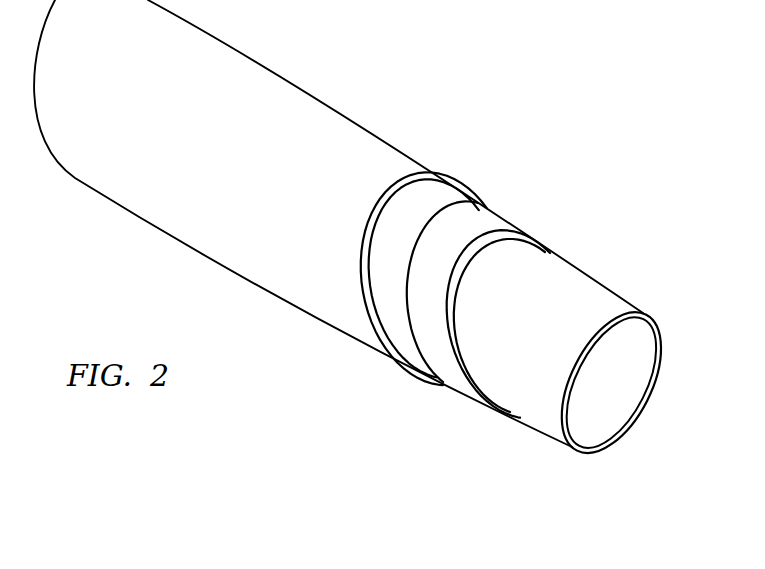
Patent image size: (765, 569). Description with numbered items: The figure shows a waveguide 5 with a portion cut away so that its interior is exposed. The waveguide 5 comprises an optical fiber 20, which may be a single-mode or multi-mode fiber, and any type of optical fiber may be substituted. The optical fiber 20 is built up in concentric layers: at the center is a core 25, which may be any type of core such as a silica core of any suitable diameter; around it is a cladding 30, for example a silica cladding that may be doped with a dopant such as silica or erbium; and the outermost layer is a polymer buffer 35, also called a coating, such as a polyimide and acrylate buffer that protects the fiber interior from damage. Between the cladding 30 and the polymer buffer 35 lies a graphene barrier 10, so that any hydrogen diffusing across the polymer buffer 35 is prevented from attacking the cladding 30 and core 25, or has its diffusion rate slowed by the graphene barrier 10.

The waveguide 5 is at (423, 92).
The polymer buffer 35 is at (393, 155).
The graphene barrier 10 is at (442, 196).
The cladding 30 is at (480, 219).
The core 25 is at (553, 275).
The optical fiber 20 is at (655, 373).